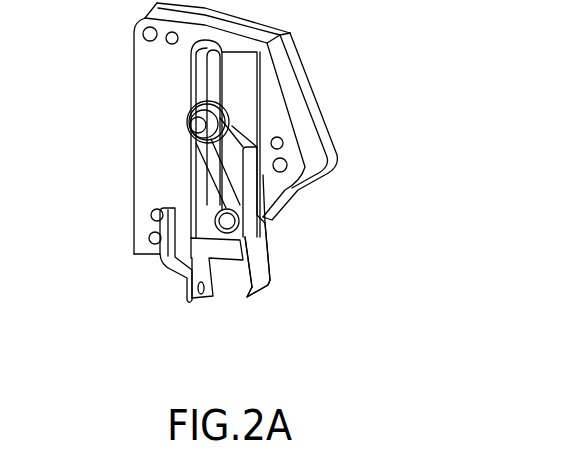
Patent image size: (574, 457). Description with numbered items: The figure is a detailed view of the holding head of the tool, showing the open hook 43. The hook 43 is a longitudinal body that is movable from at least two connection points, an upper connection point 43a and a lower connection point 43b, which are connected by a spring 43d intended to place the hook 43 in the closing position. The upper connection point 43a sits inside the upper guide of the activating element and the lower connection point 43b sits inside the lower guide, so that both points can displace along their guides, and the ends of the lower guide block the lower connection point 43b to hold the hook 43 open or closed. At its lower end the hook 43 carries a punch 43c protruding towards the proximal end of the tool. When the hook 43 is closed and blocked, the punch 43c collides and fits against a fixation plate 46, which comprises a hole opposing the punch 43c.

The hook 43 is at (255, 257).
The upper connection point 43a is at (190, 128).
The lower connection point 43b is at (265, 230).
The punch 43c is at (270, 280).
The spring 43d is at (222, 167).
The fixation plate 46 is at (180, 277).